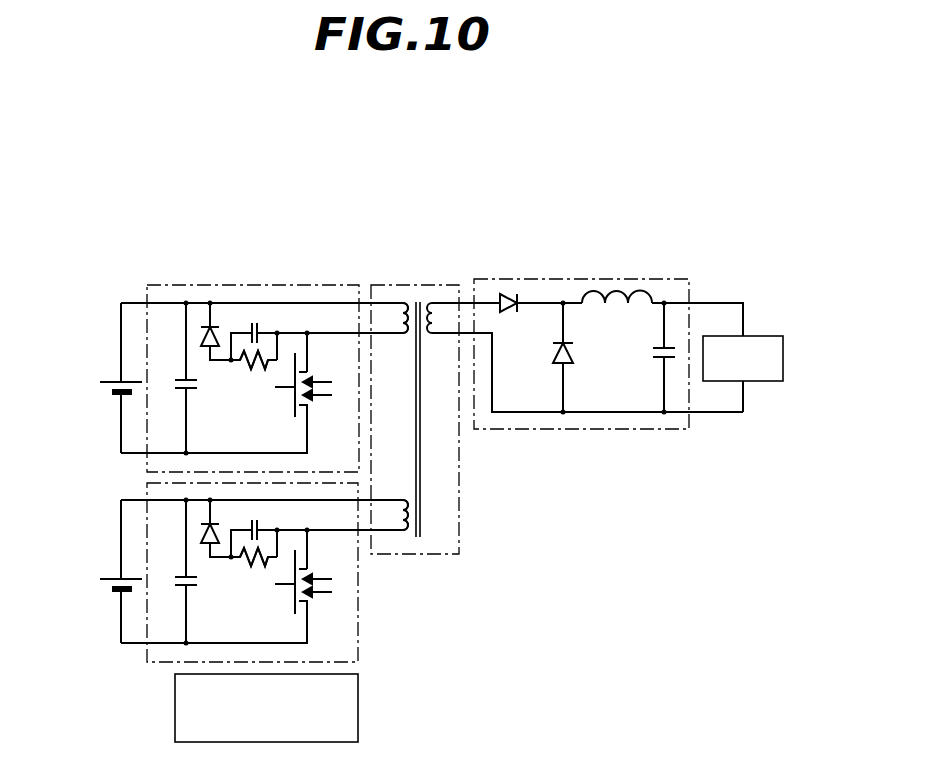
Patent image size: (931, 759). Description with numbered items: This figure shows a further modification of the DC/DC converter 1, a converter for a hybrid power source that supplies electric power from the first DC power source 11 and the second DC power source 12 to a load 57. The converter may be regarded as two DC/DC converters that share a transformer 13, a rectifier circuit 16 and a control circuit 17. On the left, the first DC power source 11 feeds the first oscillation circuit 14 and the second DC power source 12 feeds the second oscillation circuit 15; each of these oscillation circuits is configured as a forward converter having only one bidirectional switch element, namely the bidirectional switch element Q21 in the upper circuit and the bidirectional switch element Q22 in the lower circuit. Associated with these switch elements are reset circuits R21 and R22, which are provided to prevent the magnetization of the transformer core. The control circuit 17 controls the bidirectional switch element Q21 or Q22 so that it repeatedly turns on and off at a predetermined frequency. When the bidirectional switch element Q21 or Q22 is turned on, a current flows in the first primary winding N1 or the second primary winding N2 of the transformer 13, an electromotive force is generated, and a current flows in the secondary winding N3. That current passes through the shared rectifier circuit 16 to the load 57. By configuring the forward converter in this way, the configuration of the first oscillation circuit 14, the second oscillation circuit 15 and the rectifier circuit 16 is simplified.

The DC/DC converter 1 is at (414, 177).
The first DC power source 11 is at (112, 372).
The second DC power source 12 is at (112, 570).
The transformer 13 is at (459, 478).
The first oscillation circuit 14 is at (280, 285).
The second oscillation circuit 15 is at (358, 595).
The rectifier circuit 16 is at (575, 279).
The control circuit 17 is at (358, 707).
The load 57 is at (765, 336).
The first primary winding N1 is at (393, 337).
The second primary winding N2 is at (393, 497).
The secondary winding N3 is at (584, 357).
The reset circuit R21 is at (243, 376).
The reset circuit R22 is at (243, 573).
The bidirectional switch element Q21 is at (324, 397).
The bidirectional switch element Q22 is at (324, 593).